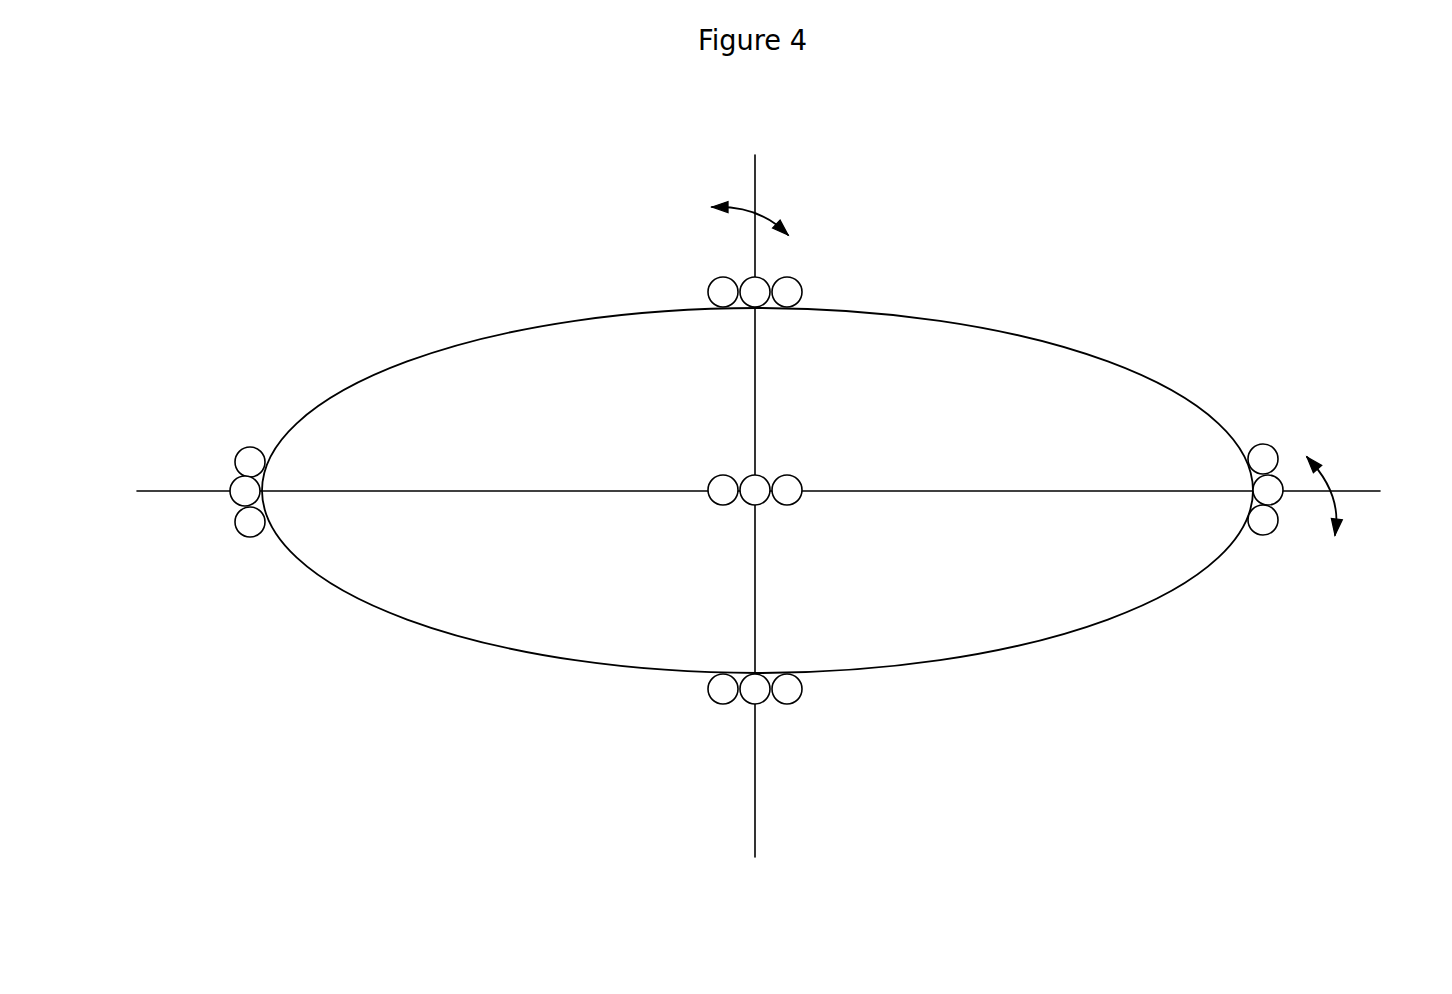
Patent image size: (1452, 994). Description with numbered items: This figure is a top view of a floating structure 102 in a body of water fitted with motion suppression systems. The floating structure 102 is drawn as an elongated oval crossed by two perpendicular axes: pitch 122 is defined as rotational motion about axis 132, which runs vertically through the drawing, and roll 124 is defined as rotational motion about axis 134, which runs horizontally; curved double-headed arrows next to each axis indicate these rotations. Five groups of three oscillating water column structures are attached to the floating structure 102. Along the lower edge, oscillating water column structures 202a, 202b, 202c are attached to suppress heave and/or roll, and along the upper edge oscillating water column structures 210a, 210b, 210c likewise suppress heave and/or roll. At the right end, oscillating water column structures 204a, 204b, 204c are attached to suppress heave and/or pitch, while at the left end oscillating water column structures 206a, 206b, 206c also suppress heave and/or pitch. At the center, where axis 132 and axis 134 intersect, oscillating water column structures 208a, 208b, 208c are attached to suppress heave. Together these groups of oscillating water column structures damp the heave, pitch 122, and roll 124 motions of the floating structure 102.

The floating structure 102 is at (528, 576).
The pitch 122 is at (803, 206).
The roll 124 is at (1327, 446).
The axis 132 is at (777, 151).
The axis 134 is at (1428, 502).
The oscillating water column structure 202a is at (710, 696).
The oscillating water column structure 202b is at (747, 703).
The oscillating water column structure 202c is at (788, 703).
The oscillating water column structure 204a is at (1249, 522).
The oscillating water column structure 204b is at (1253, 491).
The oscillating water column structure 204c is at (1248, 460).
The oscillating water column structure 206a is at (264, 518).
The oscillating water column structure 206b is at (261, 494).
The oscillating water column structure 206c is at (264, 469).
The oscillating water column structure 208a is at (712, 500).
The oscillating water column structure 208b is at (759, 505).
The oscillating water column structure 208c is at (800, 497).
The oscillating water column structure 210a is at (715, 306).
The oscillating water column structure 210b is at (748, 307).
The oscillating water column structure 210c is at (792, 306).